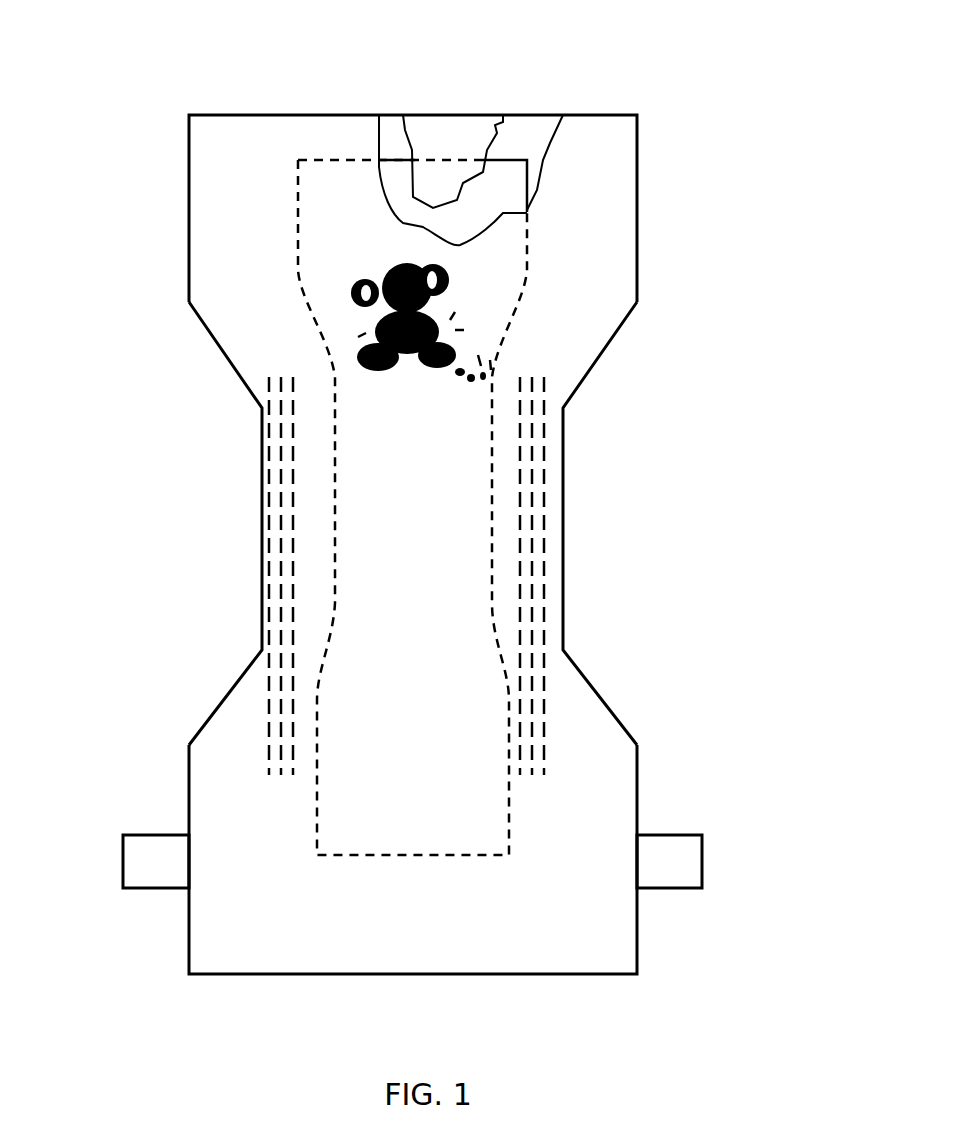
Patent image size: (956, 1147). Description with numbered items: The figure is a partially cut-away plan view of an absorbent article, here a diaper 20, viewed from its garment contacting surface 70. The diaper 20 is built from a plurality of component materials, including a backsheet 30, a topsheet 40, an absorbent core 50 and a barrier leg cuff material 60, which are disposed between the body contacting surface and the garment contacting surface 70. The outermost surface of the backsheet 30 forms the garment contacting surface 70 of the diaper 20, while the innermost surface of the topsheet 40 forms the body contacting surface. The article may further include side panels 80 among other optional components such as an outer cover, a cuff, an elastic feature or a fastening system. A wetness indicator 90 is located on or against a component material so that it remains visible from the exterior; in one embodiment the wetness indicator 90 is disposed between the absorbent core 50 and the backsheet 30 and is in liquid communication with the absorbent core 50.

The diaper 20 is at (666, 162).
The backsheet 30 is at (644, 763).
The topsheet 40 is at (449, 126).
The absorbent core 50 is at (510, 158).
The barrier leg cuff material 60 is at (291, 575).
The garment contacting surface 70 is at (582, 327).
The side panels 80 is at (208, 221).
The wetness indicator 90 is at (364, 331).